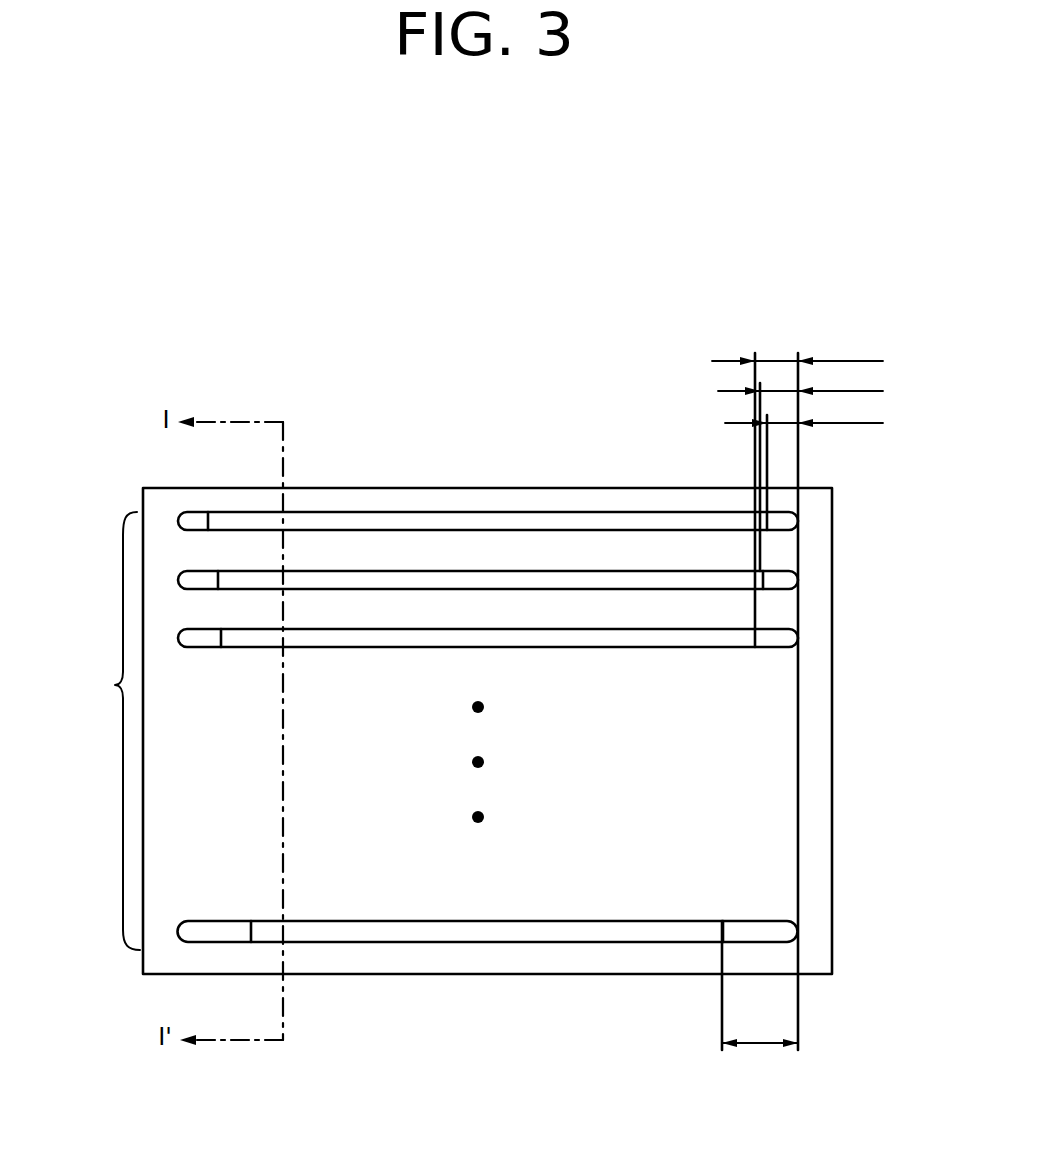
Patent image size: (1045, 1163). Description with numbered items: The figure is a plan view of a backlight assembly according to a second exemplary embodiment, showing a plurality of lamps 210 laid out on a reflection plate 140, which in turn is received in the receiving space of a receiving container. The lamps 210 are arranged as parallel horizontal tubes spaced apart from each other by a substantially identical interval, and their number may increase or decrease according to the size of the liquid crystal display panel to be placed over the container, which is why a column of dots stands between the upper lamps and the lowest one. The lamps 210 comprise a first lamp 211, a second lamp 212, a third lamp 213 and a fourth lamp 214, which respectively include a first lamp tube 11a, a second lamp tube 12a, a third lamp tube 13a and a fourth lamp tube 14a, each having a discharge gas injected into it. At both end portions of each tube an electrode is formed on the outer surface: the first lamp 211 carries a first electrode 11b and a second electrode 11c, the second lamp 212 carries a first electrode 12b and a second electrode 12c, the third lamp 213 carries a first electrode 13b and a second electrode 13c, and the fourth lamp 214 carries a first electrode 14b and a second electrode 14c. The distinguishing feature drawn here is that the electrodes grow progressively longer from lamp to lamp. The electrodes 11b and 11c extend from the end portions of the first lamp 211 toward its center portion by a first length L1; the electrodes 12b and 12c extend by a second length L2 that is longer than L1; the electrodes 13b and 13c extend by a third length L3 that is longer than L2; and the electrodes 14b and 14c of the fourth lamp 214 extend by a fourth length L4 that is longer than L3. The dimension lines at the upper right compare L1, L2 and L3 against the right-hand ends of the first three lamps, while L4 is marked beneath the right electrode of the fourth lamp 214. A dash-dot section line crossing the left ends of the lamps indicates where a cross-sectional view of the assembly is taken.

The first lamp tube 11a is at (369, 523).
The first electrode of the first lamp 11b is at (790, 521).
The second electrode of the first lamp 11c is at (187, 512).
The second lamp tube 12a is at (487, 580).
The first electrode of the second lamp 12b is at (790, 581).
The second electrode of the second lamp 12c is at (185, 580).
The third lamp tube 13a is at (617, 635).
The first electrode of the third lamp 13b is at (790, 639).
The second electrode of the third lamp 13c is at (197, 638).
The fourth lamp tube 14a is at (457, 927).
The first electrode of the fourth lamp 14b is at (785, 932).
The second electrode of the fourth lamp 14c is at (192, 925).
The reflection plate 140 is at (812, 955).
The lamps 210 is at (98, 731).
The first lamp 211 is at (745, 540).
The second lamp 212 is at (747, 597).
The third lamp 213 is at (738, 656).
The fourth lamp 214 is at (590, 958).
The first length L1 is at (804, 413).
The second length L2 is at (800, 382).
The third length L3 is at (797, 351).
The fourth length L4 is at (760, 1029).